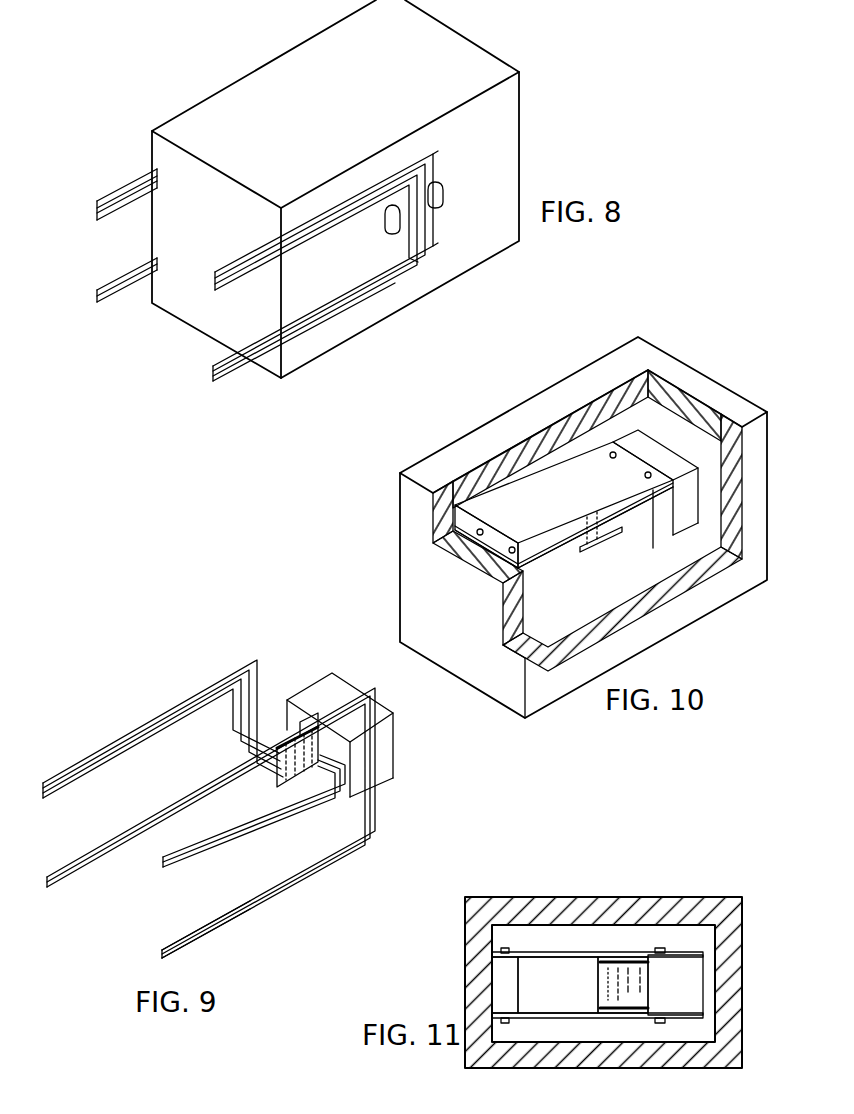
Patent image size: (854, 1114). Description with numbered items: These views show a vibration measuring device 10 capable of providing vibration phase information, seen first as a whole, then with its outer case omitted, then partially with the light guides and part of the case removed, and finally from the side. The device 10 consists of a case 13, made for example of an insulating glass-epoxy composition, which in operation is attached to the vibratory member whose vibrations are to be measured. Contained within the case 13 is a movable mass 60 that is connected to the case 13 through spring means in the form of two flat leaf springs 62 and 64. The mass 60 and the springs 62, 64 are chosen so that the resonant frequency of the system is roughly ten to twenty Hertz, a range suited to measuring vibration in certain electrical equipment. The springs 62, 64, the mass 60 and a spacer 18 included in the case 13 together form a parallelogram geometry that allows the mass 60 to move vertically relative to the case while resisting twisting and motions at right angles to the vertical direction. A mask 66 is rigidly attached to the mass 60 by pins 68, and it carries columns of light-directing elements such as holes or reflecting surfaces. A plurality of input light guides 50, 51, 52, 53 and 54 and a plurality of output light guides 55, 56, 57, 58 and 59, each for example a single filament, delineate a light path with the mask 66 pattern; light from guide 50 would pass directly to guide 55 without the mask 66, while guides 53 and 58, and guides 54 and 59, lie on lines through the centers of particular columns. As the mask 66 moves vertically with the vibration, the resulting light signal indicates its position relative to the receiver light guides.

In FIG. 8, the device 10 is at (212, 91).
In FIG. 8, the case 13 is at (523, 115).
In FIG. 10, the case 13 is at (703, 378).
In FIG. 11, the case 13 is at (663, 907).
In FIG. 10, the spacer 18 is at (538, 574).
In FIG. 11, the spacer 18 is at (508, 966).
In FIG. 9, the input light guide 50 is at (93, 755).
In FIG. 9, the input light guide 51 is at (127, 740).
In FIG. 9, the input light guide 52 is at (157, 738).
In FIG. 9, the input light guide 53 is at (98, 847).
In FIG. 9, the input light guide 54 is at (108, 853).
In FIG. 9, the output light guide 55 is at (178, 850).
In FIG. 9, the output light guide 56 is at (197, 850).
In FIG. 9, the output light guide 57 is at (238, 827).
In FIG. 9, the output light guide 58 is at (212, 918).
In FIG. 9, the output light guide 59 is at (268, 898).
In FIG. 10, the mass 60 is at (685, 517).
In FIG. 9, the mass 60 is at (305, 695).
In FIG. 11, the mass 60 is at (683, 967).
In FIG. 10, the flat leaf spring 62 is at (537, 503).
In FIG. 11, the flat leaf spring 62 is at (577, 953).
In FIG. 10, the flat leaf spring 64 is at (615, 578).
In FIG. 11, the flat leaf spring 64 is at (562, 1013).
In FIG. 9, the mask 66 is at (277, 773).
In FIG. 11, the mask 66 is at (602, 978).
In FIG. 10, the pin 68 is at (590, 553).
In FIG. 9, the pin 68 is at (307, 718).